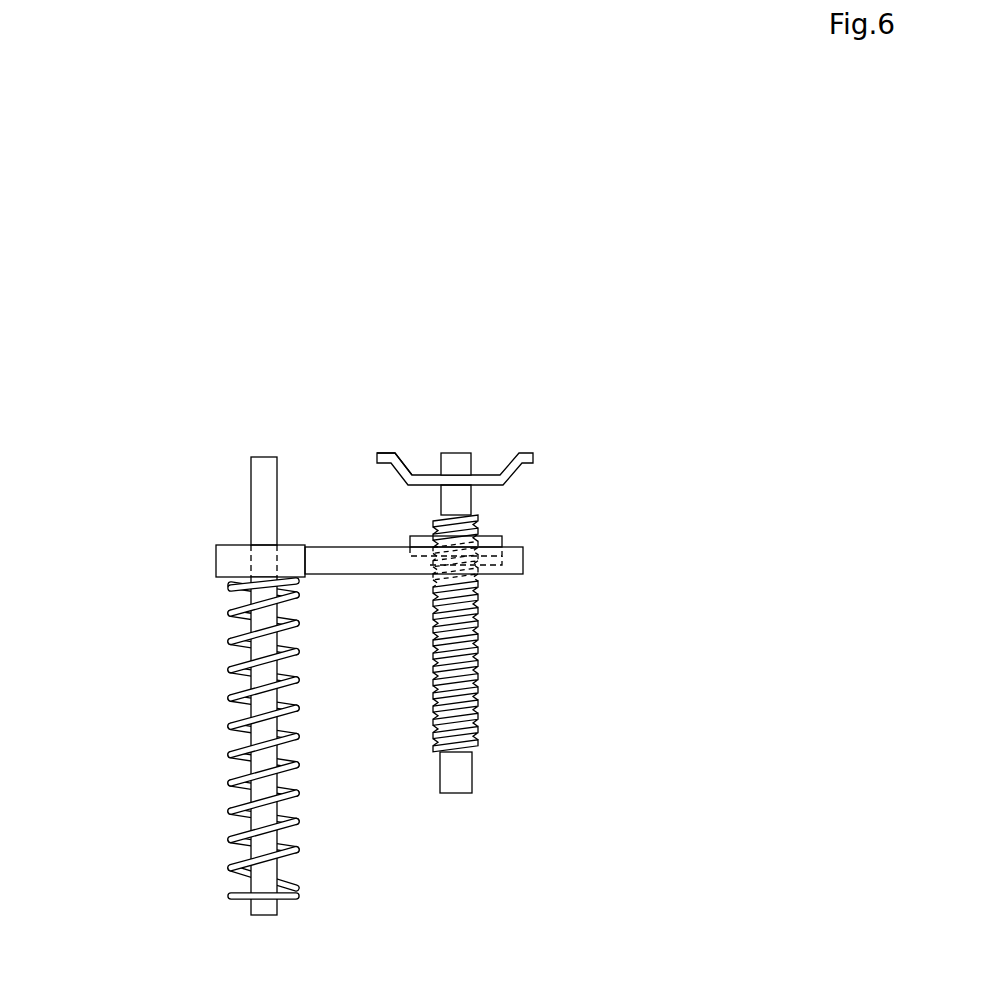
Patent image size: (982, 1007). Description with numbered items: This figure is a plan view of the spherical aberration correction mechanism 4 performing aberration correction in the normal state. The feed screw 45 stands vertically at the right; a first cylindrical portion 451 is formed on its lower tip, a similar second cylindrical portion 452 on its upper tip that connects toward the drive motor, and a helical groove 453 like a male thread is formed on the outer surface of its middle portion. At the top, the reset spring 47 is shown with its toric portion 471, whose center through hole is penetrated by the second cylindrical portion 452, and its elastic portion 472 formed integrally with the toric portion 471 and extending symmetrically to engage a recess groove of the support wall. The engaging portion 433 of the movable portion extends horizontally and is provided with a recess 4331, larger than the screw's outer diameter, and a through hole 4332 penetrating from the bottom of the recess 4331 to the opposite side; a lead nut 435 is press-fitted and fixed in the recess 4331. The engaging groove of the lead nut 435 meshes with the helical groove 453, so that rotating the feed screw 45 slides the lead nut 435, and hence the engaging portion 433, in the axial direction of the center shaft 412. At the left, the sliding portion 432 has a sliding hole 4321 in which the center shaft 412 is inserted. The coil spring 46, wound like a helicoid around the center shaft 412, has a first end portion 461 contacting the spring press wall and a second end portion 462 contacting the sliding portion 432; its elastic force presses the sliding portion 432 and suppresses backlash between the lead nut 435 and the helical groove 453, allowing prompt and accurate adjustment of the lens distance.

The spherical aberration correction mechanism 4 is at (138, 248).
The reset spring 47 is at (427, 478).
The toric portion 471 is at (463, 473).
The elastic portion 472 is at (378, 458).
The feed screw 45 is at (541, 617).
The first cylindrical portion 451 is at (455, 780).
The second cylindrical portion 452 is at (462, 497).
The helical groove 453 is at (470, 700).
The engaging portion 433 is at (522, 572).
The recess 4331 is at (505, 554).
The through hole 4332 is at (503, 578).
The lead nut 435 is at (502, 538).
The sliding portion 432 is at (222, 557).
The sliding hole 4321 is at (246, 547).
The center shaft 412 is at (258, 915).
The coil spring 46 is at (243, 790).
The first end portion 461 is at (268, 895).
The second end portion 462 is at (245, 591).